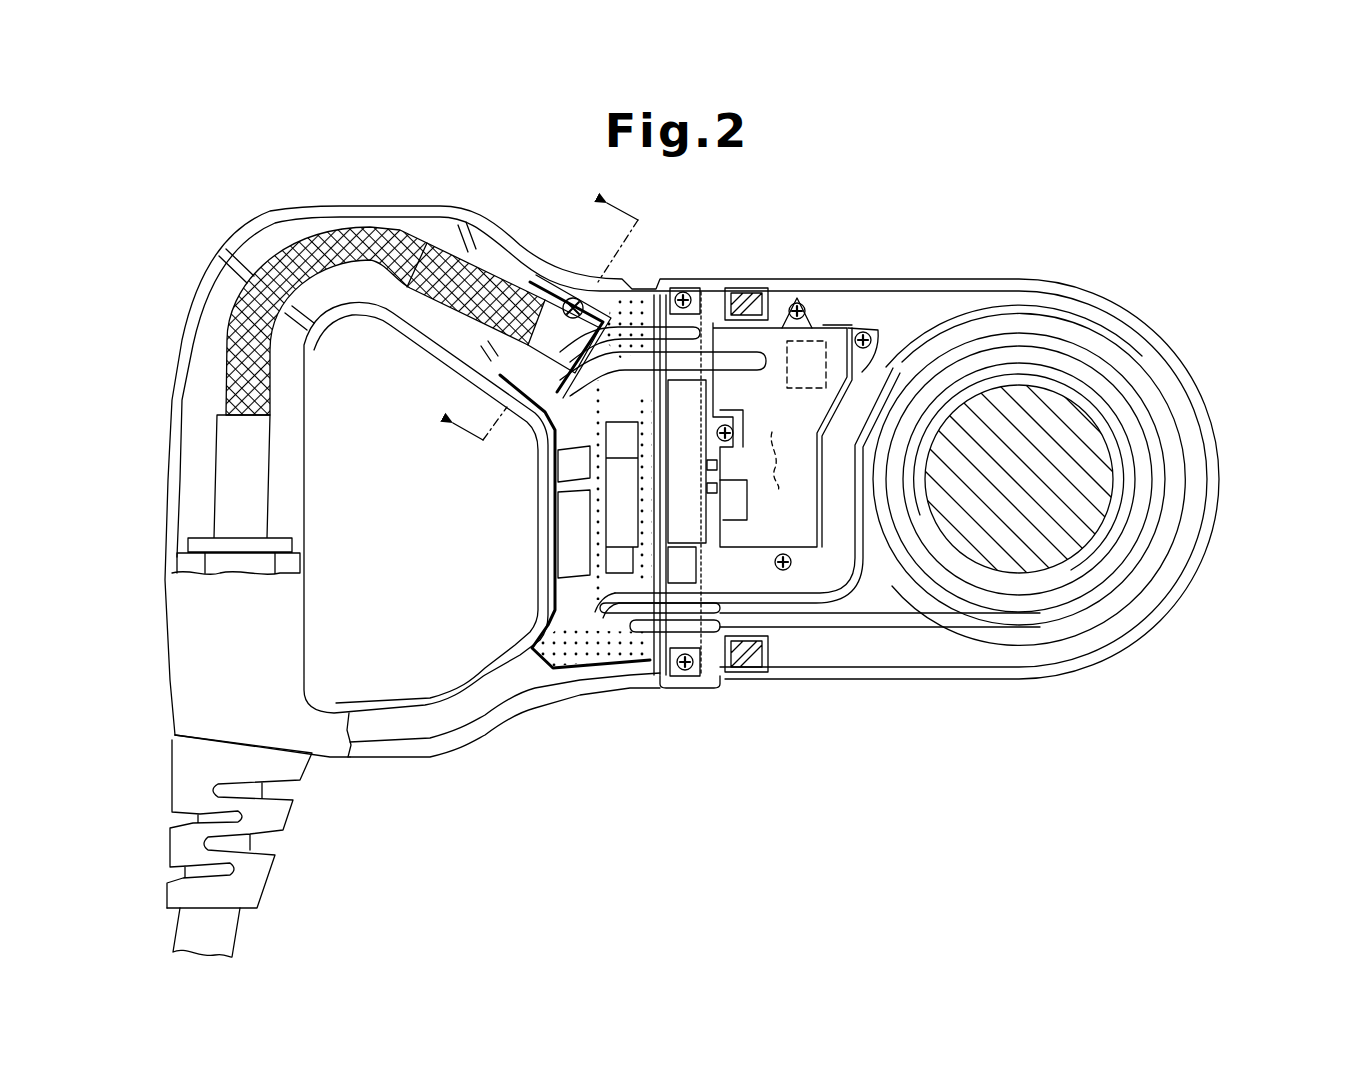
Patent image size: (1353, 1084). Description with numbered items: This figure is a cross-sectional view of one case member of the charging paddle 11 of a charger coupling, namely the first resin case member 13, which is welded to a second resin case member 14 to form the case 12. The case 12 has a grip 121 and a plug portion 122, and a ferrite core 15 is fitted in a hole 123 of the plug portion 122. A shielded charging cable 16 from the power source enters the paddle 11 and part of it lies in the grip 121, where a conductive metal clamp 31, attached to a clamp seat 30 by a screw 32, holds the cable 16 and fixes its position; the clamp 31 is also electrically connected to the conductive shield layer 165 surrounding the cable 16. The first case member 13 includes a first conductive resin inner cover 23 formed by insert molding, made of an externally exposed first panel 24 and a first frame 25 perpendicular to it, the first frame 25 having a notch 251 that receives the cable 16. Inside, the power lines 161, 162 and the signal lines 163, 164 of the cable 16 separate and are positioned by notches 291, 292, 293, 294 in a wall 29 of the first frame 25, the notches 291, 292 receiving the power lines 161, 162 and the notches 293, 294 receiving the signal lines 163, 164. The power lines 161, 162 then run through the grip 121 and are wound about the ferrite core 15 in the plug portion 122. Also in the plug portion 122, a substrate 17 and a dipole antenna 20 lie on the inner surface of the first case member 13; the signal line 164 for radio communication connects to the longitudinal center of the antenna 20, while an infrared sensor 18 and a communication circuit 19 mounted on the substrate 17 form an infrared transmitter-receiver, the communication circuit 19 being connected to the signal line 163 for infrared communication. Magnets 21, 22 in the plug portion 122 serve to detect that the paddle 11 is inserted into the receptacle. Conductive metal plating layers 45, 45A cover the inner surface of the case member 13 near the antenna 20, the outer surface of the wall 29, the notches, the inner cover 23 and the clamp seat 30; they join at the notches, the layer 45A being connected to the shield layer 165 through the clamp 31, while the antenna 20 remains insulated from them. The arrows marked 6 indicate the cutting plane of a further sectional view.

The section line 6 is at (538, 317).
The paddle 11 is at (593, 825).
The case 12 is at (315, 846).
The first resin case member 13 is at (390, 757).
The second resin case member 14 is at (325, 740).
The ferrite core 15 is at (1070, 417).
The shielded charging cable 16 is at (410, 206).
The substrate 17 is at (812, 333).
The infrared sensor 18 is at (779, 434).
The communication circuit 19 is at (830, 313).
The dipole antenna 20 is at (688, 560).
The magnet 21 is at (746, 294).
The magnet 22 is at (742, 667).
The first conductive resin inner cover 23 is at (521, 500).
The first panel 24 is at (560, 468).
The first frame 25 is at (560, 500).
The wall 29 is at (615, 685).
The clamp seat 30 is at (520, 272).
The clamp 31 is at (493, 363).
The screw 32 is at (532, 276).
The conductive metal plating layer 45 is at (700, 672).
The conductive metal plating layer 45A is at (541, 428).
The grip 121 is at (310, 461).
The plug portion 122 is at (1207, 425).
The hole 123 is at (1095, 500).
The power line 161 is at (787, 625).
The power line 162 is at (820, 598).
The signal line 163 is at (783, 340).
The signal line 164 is at (712, 345).
The conductive shield layer 165 is at (455, 246).
The notch 251 is at (513, 392).
The notch 291 is at (620, 620).
The notch 292 is at (620, 605).
The notch 293 is at (614, 300).
The notch 294 is at (666, 290).